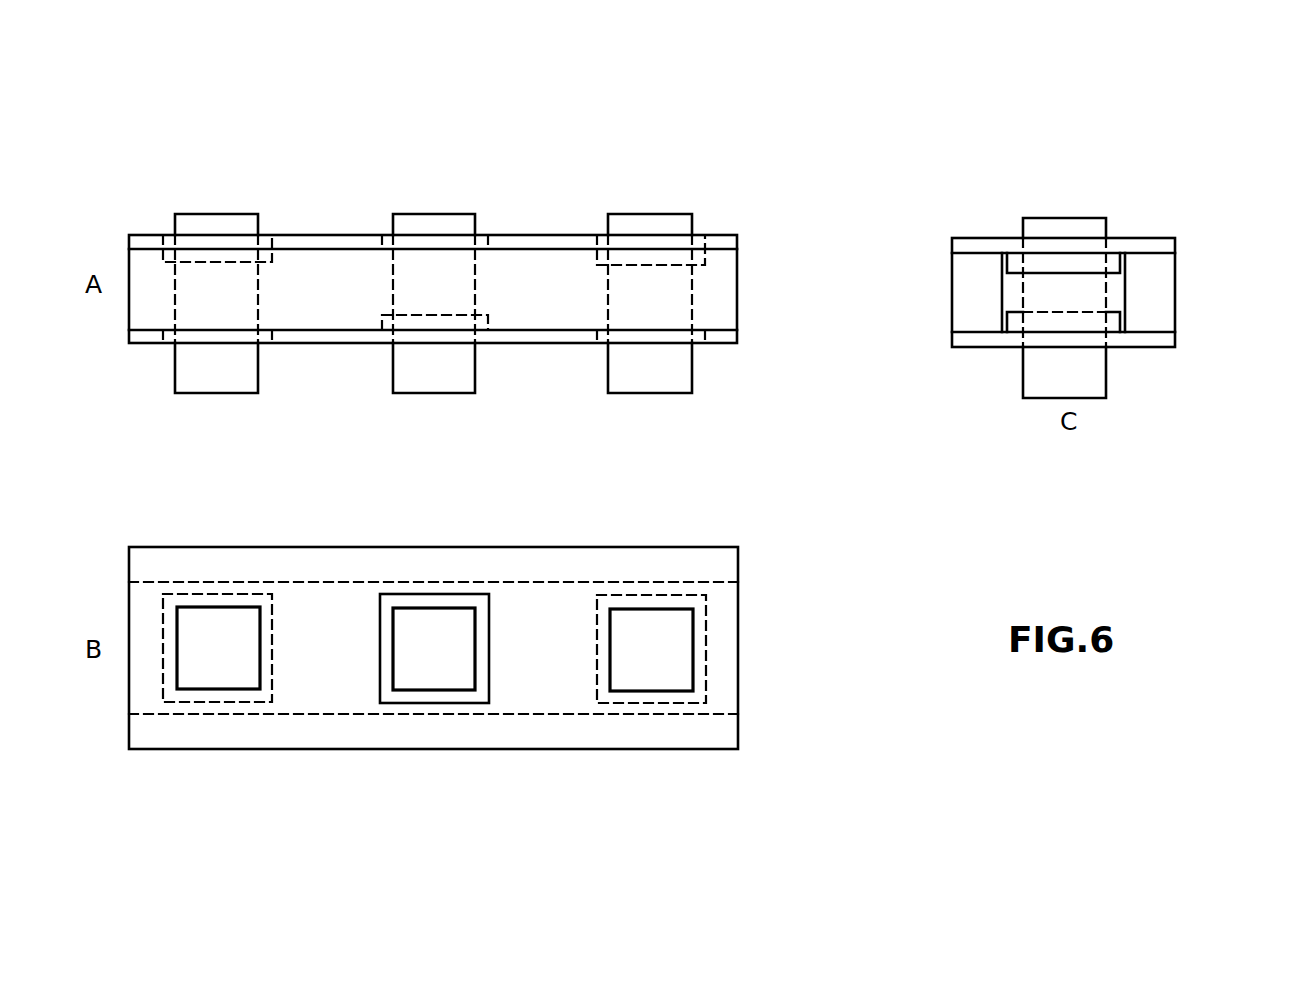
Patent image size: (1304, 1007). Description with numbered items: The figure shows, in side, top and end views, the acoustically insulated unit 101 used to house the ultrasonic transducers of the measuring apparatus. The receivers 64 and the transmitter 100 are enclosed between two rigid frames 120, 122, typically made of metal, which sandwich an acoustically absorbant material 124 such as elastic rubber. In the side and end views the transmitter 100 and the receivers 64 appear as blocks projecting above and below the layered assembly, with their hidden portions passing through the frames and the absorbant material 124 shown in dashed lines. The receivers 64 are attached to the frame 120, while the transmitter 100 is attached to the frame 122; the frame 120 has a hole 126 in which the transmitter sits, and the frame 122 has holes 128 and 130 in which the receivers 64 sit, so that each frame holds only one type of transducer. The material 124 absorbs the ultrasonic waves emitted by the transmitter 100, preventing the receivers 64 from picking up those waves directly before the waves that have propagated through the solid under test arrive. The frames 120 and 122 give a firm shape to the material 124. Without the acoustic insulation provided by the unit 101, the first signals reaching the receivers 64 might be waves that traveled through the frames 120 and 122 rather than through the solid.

The receivers 64 is at (222, 213).
The transmitter 100 is at (450, 213).
The acoustically insulated unit 101 is at (433, 135).
The rigid frame 120 is at (715, 243).
The rigid frame 122 is at (712, 348).
The acoustically absorbant material 124 is at (730, 283).
The hole 126 is at (400, 235).
The hole 128 is at (222, 345).
The hole 130 is at (643, 347).